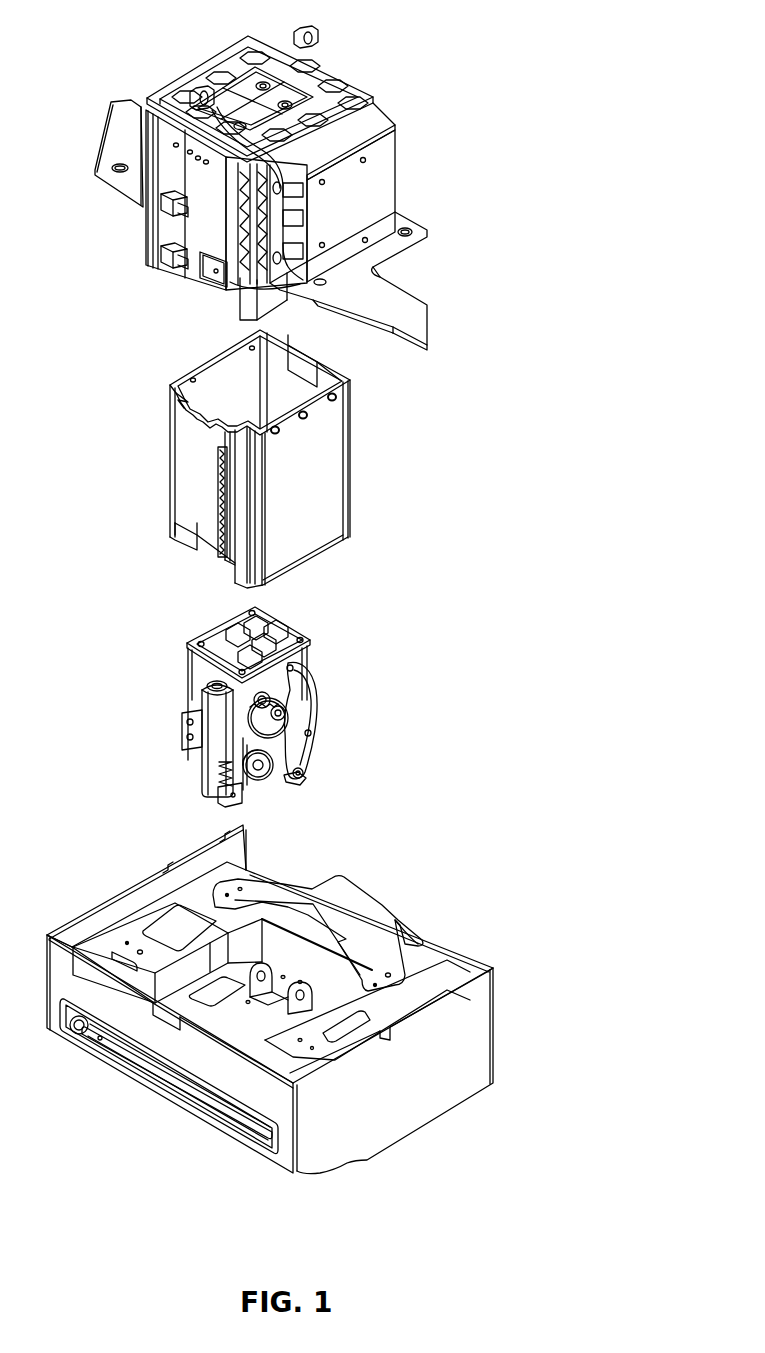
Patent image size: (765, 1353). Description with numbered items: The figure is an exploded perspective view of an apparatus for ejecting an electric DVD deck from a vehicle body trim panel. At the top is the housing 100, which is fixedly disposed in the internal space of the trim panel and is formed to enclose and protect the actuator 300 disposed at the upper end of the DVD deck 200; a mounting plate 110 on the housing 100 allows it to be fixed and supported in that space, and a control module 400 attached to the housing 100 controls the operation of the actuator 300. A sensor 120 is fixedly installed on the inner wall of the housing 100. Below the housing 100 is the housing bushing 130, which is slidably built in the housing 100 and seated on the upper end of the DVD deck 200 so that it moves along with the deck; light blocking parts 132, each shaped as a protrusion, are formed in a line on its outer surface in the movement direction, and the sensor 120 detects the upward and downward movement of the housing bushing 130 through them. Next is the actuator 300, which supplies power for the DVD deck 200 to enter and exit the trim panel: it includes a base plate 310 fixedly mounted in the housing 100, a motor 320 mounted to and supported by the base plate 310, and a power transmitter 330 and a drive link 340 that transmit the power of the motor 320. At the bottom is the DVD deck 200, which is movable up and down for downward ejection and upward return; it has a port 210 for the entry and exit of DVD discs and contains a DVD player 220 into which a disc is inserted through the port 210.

The housing 100 is at (340, 75).
The mounting plate 110 is at (405, 297).
The sensor 120 is at (213, 273).
The housing bushing 130 is at (280, 459).
The light blocking parts 132 is at (218, 482).
The DVD deck 200 is at (318, 1033).
The port 210 is at (255, 1151).
The DVD player 220 is at (207, 1121).
The actuator 300 is at (284, 693).
The base plate 310 is at (287, 625).
The motor 320 is at (210, 718).
The power transmitter 330 is at (307, 757).
The drive link 340 is at (320, 695).
The control module 400 is at (392, 147).